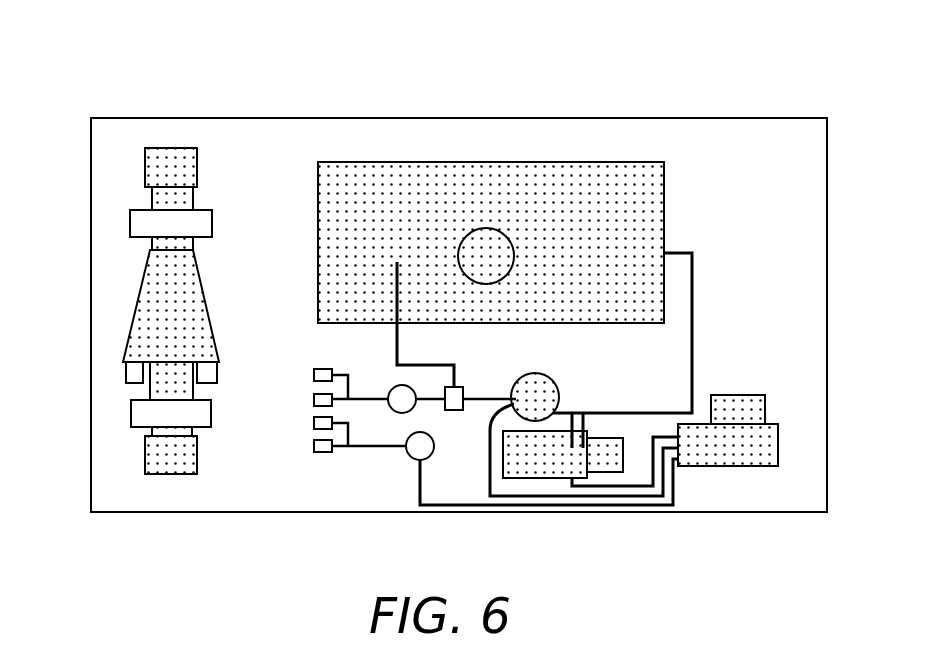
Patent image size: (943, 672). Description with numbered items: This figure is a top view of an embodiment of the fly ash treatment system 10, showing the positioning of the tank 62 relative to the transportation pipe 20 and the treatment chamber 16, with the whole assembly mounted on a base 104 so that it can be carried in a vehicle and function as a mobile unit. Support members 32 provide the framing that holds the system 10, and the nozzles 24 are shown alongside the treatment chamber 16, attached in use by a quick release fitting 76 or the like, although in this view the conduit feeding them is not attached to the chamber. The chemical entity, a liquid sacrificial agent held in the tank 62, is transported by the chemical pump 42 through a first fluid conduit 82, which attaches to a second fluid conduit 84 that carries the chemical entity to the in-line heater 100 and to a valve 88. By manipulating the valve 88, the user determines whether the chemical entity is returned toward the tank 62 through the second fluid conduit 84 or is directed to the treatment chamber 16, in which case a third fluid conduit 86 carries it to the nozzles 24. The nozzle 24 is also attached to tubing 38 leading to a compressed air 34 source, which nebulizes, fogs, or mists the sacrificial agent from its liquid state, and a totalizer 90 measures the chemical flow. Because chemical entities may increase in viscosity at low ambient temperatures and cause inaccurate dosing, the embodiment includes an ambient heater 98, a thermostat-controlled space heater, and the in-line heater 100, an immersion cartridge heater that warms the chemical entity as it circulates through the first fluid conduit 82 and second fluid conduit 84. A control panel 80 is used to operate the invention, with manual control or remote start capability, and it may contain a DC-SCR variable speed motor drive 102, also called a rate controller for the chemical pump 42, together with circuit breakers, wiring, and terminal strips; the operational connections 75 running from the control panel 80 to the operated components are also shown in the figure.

The fly ash treatment system 10 is at (204, 66).
The treatment chamber 16 is at (152, 302).
The transportation pipe 20 is at (160, 173).
The nozzle 24 is at (316, 375).
The support member 32 is at (145, 226).
The compressed air 34 is at (410, 447).
The tubing 38 is at (341, 450).
The chemical pump 42 is at (528, 458).
The tank 62 is at (365, 178).
The operational connections 75 is at (662, 471).
The quick release fitting 76 is at (208, 378).
The control panel 80 is at (733, 455).
The first fluid conduit 82 is at (693, 277).
The second fluid conduit 84 is at (437, 365).
The third fluid conduit 86 is at (360, 397).
The valve 88 is at (460, 407).
The totalizer 90 is at (403, 398).
The ambient heater 98 is at (748, 405).
The in-line heater 100 is at (513, 402).
The variable speed motor drive 102 is at (600, 463).
The base 104 is at (775, 137).